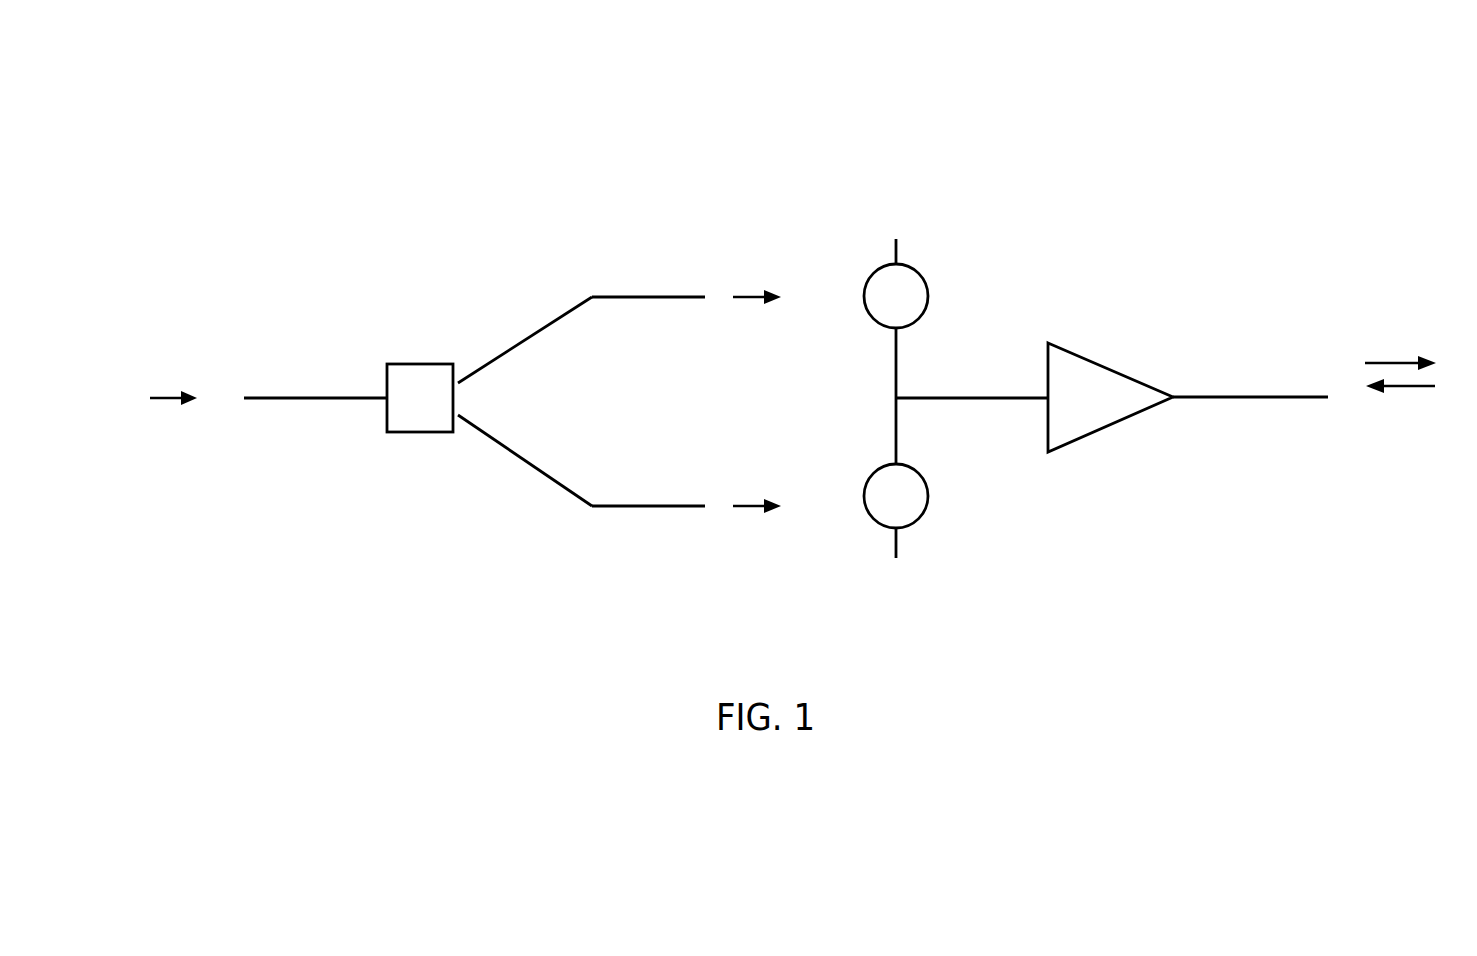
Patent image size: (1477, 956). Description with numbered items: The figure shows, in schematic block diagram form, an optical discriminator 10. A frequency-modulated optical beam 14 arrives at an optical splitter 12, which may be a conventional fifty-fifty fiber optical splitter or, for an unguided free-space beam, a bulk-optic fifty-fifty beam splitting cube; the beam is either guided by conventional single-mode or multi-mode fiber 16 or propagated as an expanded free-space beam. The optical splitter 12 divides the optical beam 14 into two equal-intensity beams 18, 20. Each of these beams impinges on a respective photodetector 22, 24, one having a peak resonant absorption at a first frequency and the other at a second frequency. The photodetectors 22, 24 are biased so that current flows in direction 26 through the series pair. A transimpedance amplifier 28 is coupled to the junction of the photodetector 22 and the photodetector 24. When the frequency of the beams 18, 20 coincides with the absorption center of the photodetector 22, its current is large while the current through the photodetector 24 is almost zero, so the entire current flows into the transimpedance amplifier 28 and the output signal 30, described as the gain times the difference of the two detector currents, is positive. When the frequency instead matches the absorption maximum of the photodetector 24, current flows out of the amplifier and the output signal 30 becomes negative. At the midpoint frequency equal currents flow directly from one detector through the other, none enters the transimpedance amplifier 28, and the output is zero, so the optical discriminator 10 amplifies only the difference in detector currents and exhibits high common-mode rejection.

The optical discriminator 10 is at (765, 125).
The optical splitter 12 is at (438, 362).
The frequency-modulated optical beam 14 is at (186, 396).
The fiber 16 is at (302, 399).
The first equal-intensity beam 18 is at (764, 290).
The second equal-intensity beam 20 is at (764, 512).
The first photodetector 22 is at (876, 272).
The second photodetector 24 is at (880, 524).
The current flow direction 26 is at (872, 422).
The transimpedance amplifier 28 is at (1120, 368).
The output signal 30 is at (1392, 352).